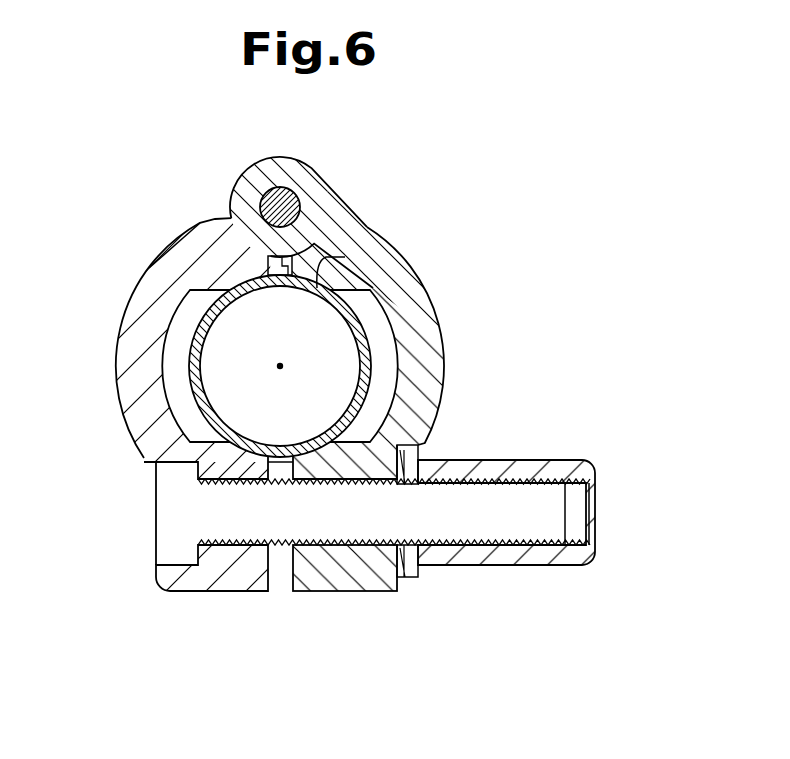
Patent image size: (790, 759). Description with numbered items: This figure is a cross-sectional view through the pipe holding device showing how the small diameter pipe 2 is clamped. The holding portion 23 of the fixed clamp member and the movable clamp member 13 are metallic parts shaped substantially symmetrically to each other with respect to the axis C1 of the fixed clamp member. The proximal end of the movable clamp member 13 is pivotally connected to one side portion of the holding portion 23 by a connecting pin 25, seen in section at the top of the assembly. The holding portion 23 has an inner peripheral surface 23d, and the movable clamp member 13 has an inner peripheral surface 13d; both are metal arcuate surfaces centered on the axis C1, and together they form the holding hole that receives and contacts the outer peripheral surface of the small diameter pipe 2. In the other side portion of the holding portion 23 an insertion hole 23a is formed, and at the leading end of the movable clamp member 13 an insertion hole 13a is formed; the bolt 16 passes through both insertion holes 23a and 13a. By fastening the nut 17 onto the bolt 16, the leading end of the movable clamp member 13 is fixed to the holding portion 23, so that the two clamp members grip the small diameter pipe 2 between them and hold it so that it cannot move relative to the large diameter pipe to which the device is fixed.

The small diameter pipe 2 is at (345, 257).
The connecting pin 25 is at (281, 188).
The movable clamp member 13 is at (432, 333).
The holding portion 23 is at (130, 421).
The inner peripheral surface of the movable clamp member 13d is at (350, 423).
The inner peripheral surface of the holding portion 23d is at (208, 330).
The axis of the fixed clamp member C1 is at (285, 364).
The insertion hole of the movable clamp member 13a is at (347, 546).
The insertion hole of the holding portion 23a is at (229, 546).
The bolt 16 is at (472, 546).
The nut 17 is at (582, 464).